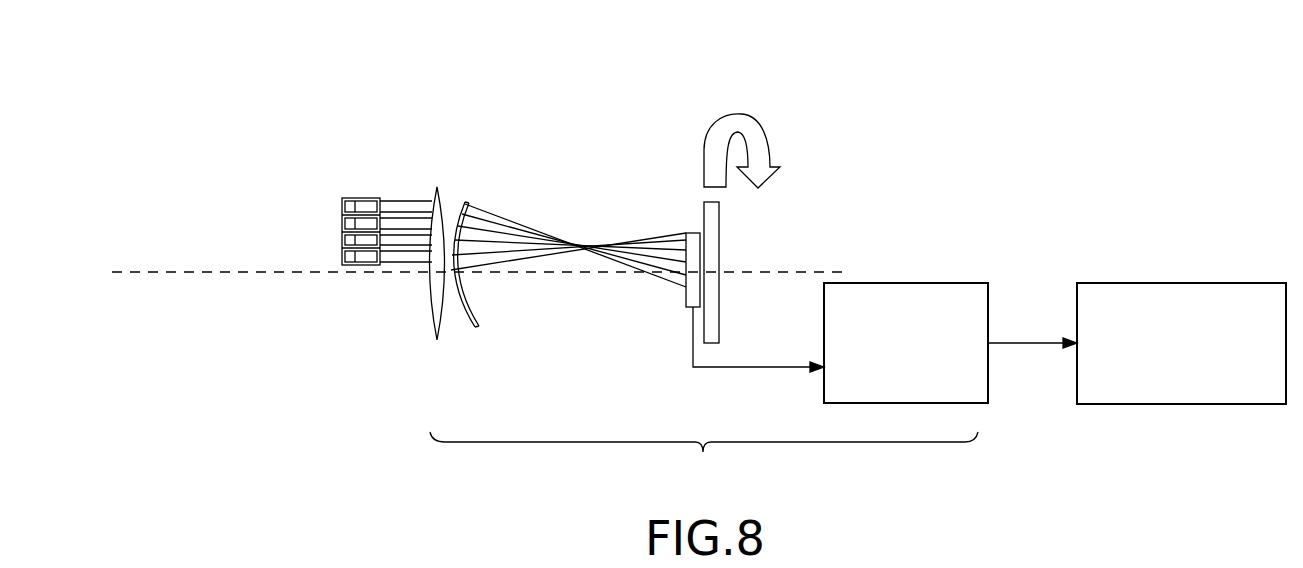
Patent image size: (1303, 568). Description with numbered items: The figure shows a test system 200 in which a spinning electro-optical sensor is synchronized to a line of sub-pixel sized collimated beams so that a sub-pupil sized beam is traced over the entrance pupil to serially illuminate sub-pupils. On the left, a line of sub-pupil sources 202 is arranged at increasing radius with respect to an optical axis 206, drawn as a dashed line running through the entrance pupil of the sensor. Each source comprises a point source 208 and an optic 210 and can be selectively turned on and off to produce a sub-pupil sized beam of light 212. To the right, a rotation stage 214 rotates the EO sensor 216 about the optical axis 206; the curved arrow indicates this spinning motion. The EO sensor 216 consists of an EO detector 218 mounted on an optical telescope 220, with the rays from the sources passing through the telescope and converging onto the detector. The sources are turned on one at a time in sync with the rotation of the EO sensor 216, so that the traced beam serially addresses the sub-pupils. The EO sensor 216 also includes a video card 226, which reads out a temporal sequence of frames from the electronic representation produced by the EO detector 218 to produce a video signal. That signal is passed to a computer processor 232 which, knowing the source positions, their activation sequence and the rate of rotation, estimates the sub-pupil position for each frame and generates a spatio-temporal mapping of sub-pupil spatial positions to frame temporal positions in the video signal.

The test system 200 is at (842, 88).
The sub-pupil sources 202 is at (232, 200).
The optical axis 206 is at (118, 270).
The point source 208 is at (340, 258).
The optic 210 is at (350, 294).
The sub-pupil sized beam of light 212 is at (400, 272).
The rotation stage 214 is at (720, 243).
The EO sensor 216 is at (704, 344).
The EO detector 218 is at (694, 232).
The optical telescope 220 is at (435, 197).
The video card 226 is at (905, 283).
The computer processor 232 is at (1160, 283).